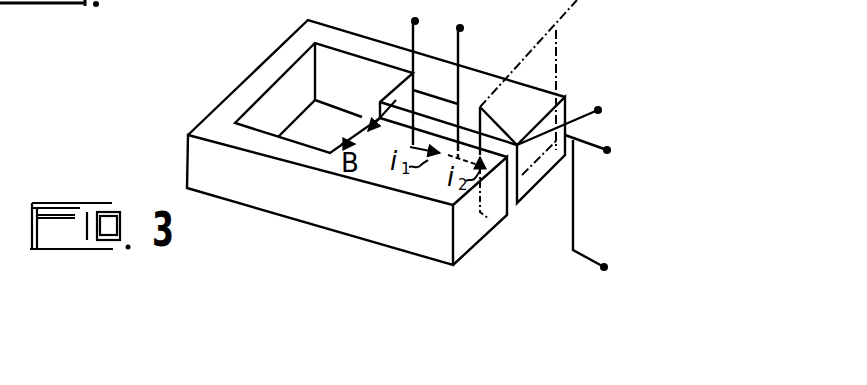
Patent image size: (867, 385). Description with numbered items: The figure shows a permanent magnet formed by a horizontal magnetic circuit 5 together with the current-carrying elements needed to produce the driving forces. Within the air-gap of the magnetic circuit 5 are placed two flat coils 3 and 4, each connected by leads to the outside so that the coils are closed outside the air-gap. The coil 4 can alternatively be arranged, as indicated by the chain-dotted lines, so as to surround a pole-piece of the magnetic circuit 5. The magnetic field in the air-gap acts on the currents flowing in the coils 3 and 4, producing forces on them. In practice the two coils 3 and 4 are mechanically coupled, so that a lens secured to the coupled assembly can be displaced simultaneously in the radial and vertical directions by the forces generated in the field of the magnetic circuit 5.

The flat coil 3 is at (431, 96).
The flat coil 4 is at (573, 198).
The horizontal magnetic circuit 5 is at (261, 202).